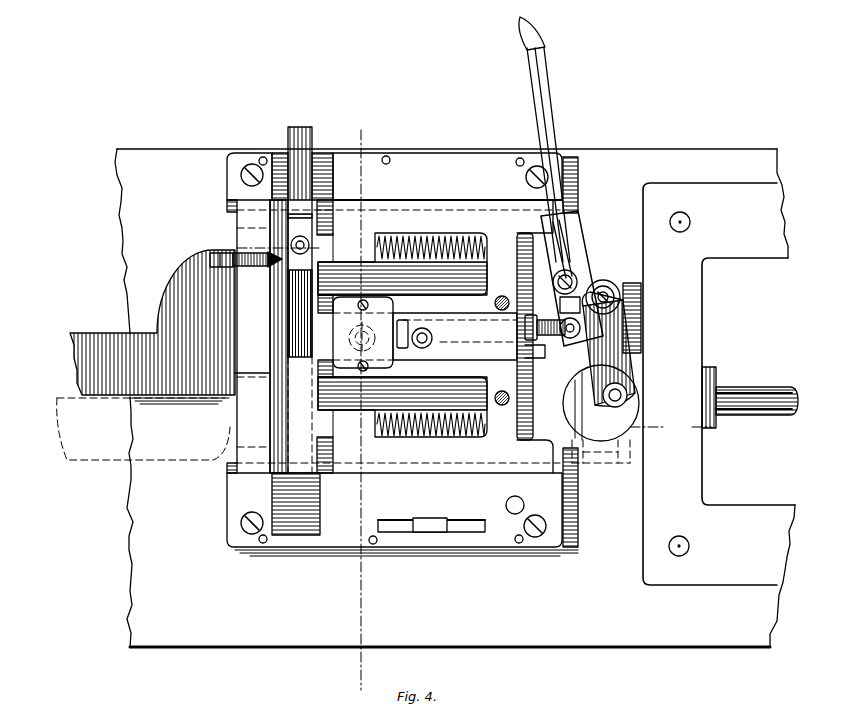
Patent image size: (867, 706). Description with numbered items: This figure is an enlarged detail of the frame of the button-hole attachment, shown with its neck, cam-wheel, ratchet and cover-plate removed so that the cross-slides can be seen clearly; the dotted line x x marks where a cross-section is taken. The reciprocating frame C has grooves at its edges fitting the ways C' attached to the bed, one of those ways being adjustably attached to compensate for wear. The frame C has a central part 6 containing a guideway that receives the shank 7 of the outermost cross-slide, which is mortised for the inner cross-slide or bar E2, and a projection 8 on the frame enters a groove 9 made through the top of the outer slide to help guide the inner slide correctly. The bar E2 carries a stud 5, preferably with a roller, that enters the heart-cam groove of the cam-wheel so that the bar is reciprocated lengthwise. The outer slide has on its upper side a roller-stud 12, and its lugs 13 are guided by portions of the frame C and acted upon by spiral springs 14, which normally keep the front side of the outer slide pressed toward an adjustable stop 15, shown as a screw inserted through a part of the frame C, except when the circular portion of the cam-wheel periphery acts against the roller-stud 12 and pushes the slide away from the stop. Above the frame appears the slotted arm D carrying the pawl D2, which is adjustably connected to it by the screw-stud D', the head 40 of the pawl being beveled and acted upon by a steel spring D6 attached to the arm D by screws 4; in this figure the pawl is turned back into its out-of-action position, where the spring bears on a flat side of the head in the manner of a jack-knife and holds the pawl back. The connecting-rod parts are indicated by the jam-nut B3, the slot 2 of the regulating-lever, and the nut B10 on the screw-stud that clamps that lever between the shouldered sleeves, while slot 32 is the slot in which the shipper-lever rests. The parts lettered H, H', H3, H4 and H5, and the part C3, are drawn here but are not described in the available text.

The arm a is at (237, 314).
The stud 5 is at (268, 246).
The adjustable stop 15 is at (272, 267).
The projection 8 is at (278, 278).
The groove 9 is at (300, 371).
The shank 7 is at (417, 334).
The roller-stud 12 is at (430, 336).
The central part 6 is at (440, 337).
The lugs 13 is at (382, 236).
The springs 14 is at (461, 241).
The slot 2 is at (560, 342).
The slot 32 is at (470, 533).
The head 40 is at (591, 284).
The screws 4 is at (633, 298).
The reciprocating frame C is at (435, 336).
The ways C' is at (402, 354).
The slide piece C3 is at (432, 518).
The slotted arm D is at (572, 274).
The pawl D2 is at (548, 122).
The steel spring D6 is at (576, 242).
The screw-stud D' is at (581, 291).
The inner bar E2 is at (290, 138).
The jam-nut B3 is at (539, 360).
The nut B10 is at (564, 320).
The frame plate H is at (719, 384).
The shaft H' is at (750, 397).
The circular opening H3 is at (607, 413).
The center line H4 is at (671, 426).
The lever arm H5 is at (620, 358).
The section line x is at (359, 402).